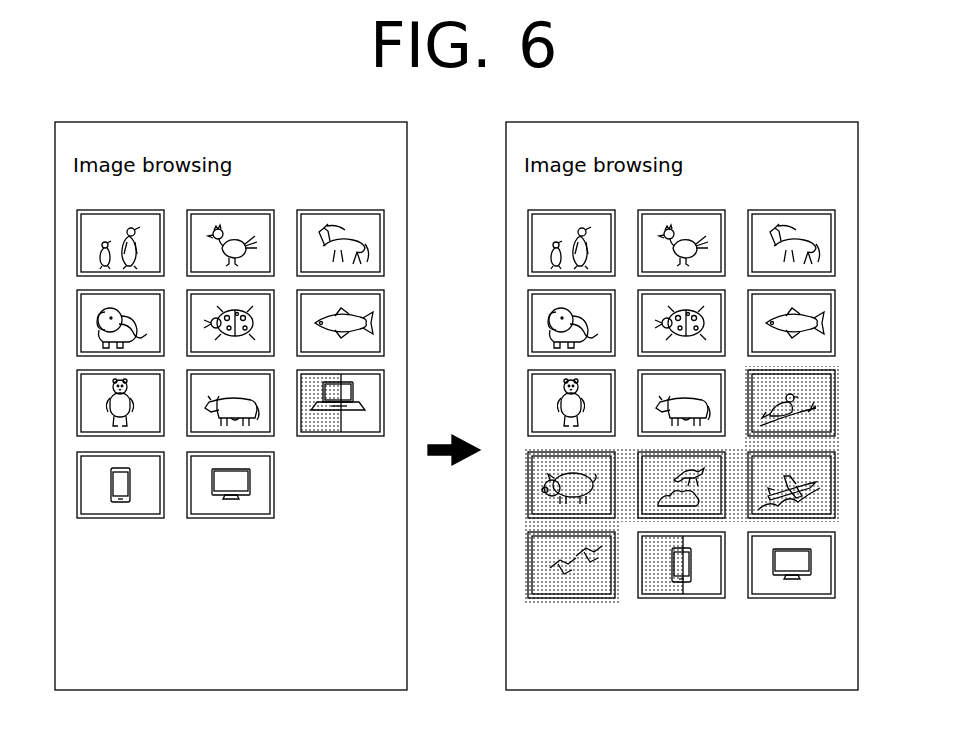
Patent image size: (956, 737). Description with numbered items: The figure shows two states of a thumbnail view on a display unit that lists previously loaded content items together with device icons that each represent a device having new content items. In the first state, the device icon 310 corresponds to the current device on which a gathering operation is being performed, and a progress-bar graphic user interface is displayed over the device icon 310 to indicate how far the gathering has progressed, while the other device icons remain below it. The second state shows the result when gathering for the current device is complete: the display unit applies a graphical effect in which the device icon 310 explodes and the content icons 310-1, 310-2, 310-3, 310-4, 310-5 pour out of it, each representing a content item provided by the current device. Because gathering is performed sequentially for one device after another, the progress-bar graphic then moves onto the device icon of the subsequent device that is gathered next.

The device icon 310 is at (386, 403).
The content icon 310-1 is at (836, 392).
The content icon 310-2 is at (528, 472).
The content icon 310-3 is at (650, 501).
The content icon 310-4 is at (836, 465).
The content icon 310-5 is at (528, 541).